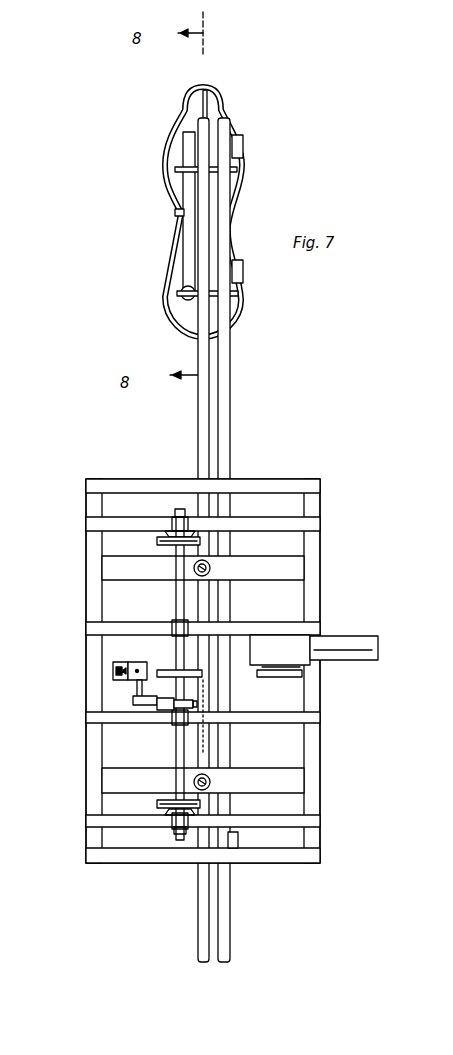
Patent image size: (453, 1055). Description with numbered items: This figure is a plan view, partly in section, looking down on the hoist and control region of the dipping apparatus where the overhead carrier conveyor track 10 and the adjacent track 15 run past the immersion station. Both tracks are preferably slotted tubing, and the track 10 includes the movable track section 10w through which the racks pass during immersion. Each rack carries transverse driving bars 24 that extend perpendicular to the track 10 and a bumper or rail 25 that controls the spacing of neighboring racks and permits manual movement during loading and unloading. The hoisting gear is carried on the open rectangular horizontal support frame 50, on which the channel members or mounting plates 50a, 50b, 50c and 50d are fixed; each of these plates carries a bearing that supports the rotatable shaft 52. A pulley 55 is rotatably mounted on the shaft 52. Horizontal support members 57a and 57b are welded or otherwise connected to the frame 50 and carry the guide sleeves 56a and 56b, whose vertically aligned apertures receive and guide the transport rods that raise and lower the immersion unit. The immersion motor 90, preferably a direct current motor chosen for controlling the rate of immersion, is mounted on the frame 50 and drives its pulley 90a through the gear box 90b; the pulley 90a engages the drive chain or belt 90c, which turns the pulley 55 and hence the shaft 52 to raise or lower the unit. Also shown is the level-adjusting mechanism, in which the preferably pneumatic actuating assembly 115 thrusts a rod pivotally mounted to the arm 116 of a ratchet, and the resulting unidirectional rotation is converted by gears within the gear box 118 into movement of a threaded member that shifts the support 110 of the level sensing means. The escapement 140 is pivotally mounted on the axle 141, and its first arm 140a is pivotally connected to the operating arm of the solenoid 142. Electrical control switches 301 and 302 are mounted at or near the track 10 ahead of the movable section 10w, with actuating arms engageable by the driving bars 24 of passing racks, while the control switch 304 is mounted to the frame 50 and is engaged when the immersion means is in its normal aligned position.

The overhead track 10 is at (198, 412).
The movable track section 10w is at (199, 760).
The track 15 is at (222, 403).
The transverse driving bar 24 is at (235, 176).
The bumper or rail 25 is at (228, 95).
The horizontal support frame 50 is at (95, 856).
The channel member or mounting plate 50a is at (95, 525).
The channel member or mounting plate 50b is at (95, 628).
The channel member or mounting plate 50c is at (95, 717).
The channel member or mounting plate 50d is at (95, 819).
The rotatable shaft 52 is at (177, 592).
The pulley 55 is at (167, 668).
The guide sleeve 56a is at (210, 782).
The guide sleeve 56b is at (210, 568).
The horizontal support member 57a is at (112, 786).
The horizontal support member 57b is at (112, 566).
The immersion motor 90 is at (354, 640).
The pulley 90a is at (300, 678).
The gear box 90b is at (270, 642).
The drive chain or belt 90c is at (243, 676).
The support 110 is at (102, 673).
The actuating assembly 115 is at (166, 708).
The arm 116 is at (137, 697).
The gear box 118 is at (116, 664).
The escapement 140 is at (149, 232).
The first arm 140a is at (185, 259).
The axle 141 is at (175, 214).
The solenoid 142 is at (186, 298).
The electrical control switch 301 is at (243, 147).
The electrical control switch 302 is at (243, 275).
The control switch 304 is at (238, 840).